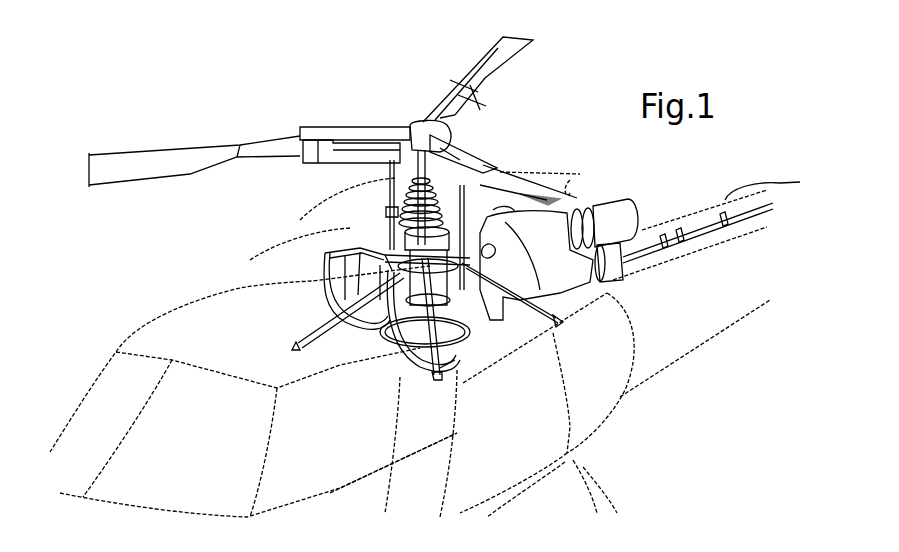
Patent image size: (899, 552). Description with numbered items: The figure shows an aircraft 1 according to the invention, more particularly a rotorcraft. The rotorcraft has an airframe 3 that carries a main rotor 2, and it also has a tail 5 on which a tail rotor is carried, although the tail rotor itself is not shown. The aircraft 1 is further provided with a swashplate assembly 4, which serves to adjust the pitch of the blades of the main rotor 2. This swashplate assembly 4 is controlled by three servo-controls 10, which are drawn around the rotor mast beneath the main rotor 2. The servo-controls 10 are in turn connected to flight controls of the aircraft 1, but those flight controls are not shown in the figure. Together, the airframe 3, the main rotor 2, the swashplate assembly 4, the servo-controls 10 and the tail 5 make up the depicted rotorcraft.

The aircraft 1 is at (108, 117).
The main rotor 2 is at (290, 119).
The airframe 3 is at (620, 397).
The swashplate assembly 4 is at (370, 191).
The tail 5 is at (740, 277).
The servo-controls 10 is at (325, 250).